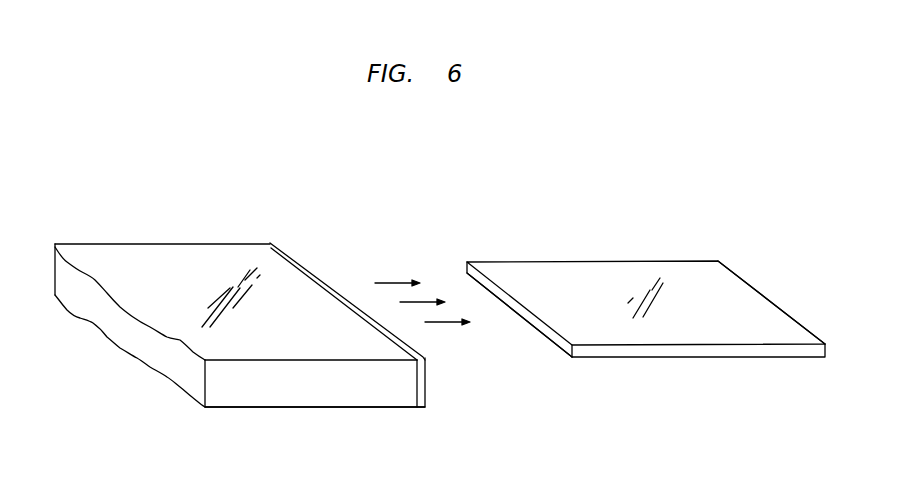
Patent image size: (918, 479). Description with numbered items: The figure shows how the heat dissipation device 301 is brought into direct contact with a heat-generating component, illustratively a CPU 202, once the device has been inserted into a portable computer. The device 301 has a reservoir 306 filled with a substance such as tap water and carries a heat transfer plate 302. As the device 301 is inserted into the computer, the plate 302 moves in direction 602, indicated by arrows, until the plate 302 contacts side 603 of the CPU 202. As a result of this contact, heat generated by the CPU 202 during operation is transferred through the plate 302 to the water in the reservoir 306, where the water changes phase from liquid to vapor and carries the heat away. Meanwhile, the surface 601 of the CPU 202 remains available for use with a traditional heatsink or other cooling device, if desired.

The device 301 is at (162, 197).
The heat transfer plate 302 is at (284, 245).
The reservoir 306 is at (313, 404).
The direction 602 is at (393, 283).
The CPU 202 is at (700, 261).
The surface 601 is at (770, 305).
The side 603 is at (558, 349).